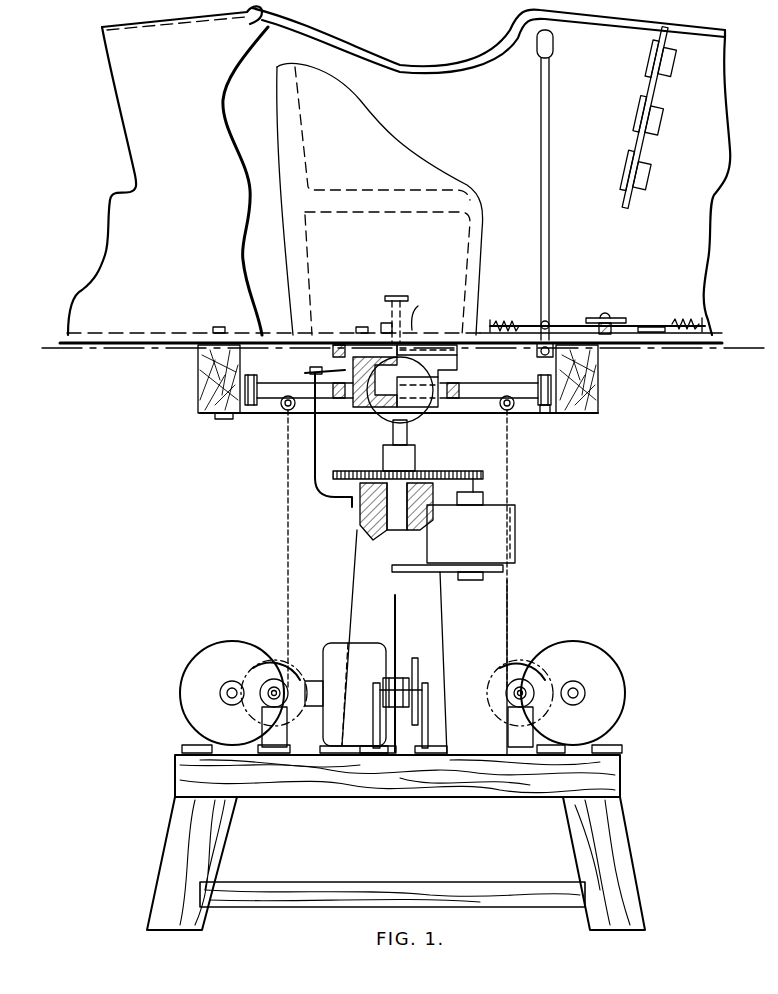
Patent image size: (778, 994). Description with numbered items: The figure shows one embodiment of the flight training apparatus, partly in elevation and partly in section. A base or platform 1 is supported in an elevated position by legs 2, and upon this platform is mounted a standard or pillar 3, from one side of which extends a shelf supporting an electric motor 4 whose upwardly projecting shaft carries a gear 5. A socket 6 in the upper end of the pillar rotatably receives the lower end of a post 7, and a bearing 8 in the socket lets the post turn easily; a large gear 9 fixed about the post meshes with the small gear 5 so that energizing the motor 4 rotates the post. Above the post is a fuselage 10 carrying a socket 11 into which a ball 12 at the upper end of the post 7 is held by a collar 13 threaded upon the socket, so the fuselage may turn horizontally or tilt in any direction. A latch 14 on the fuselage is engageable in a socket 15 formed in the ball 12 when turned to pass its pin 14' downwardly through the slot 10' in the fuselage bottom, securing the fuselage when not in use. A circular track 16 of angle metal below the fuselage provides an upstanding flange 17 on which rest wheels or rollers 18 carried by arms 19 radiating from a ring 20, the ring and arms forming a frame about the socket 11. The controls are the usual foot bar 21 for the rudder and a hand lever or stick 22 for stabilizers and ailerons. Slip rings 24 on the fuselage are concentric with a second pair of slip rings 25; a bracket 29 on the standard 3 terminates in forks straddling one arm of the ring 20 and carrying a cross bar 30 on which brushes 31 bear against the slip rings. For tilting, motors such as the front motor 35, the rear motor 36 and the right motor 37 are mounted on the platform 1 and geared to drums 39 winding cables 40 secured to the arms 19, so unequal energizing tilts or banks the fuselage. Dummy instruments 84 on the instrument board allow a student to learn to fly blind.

The base or platform 1 is at (625, 770).
The legs 2 is at (635, 840).
The standard or pillar 3 is at (442, 612).
The electric motor 4 is at (517, 520).
The gear 5 is at (485, 475).
The socket 6 is at (357, 506).
The post 7 is at (362, 518).
The bearing 8 is at (360, 532).
The large gear 9 is at (332, 477).
The fuselage 10 is at (391, 358).
The slot 10' is at (427, 326).
The socket 11 is at (442, 366).
The ball 12 is at (412, 405).
The collar 13 is at (447, 402).
The latch 14 is at (459, 276).
The pin 14' is at (376, 309).
The socket 15 is at (418, 350).
The circular track 16 is at (545, 414).
The upstanding flange 17 is at (540, 410).
The wheels or rollers 18 is at (557, 383).
The arms 19 is at (503, 383).
The ring 20 is at (338, 400).
The foot bar 21 is at (612, 320).
The hand lever or stick 22 is at (551, 222).
The slip rings 24 is at (300, 342).
The slip rings 25 is at (318, 342).
The bracket 29 is at (320, 455).
The cross bar 30 is at (318, 370).
The brushes 31 is at (344, 372).
The front motor 35 is at (573, 697).
The rear motor 36 is at (235, 697).
The right motor 37 is at (346, 698).
The drums 39 is at (398, 700).
The cables 40 is at (510, 625).
The dummy instruments 84 is at (650, 160).